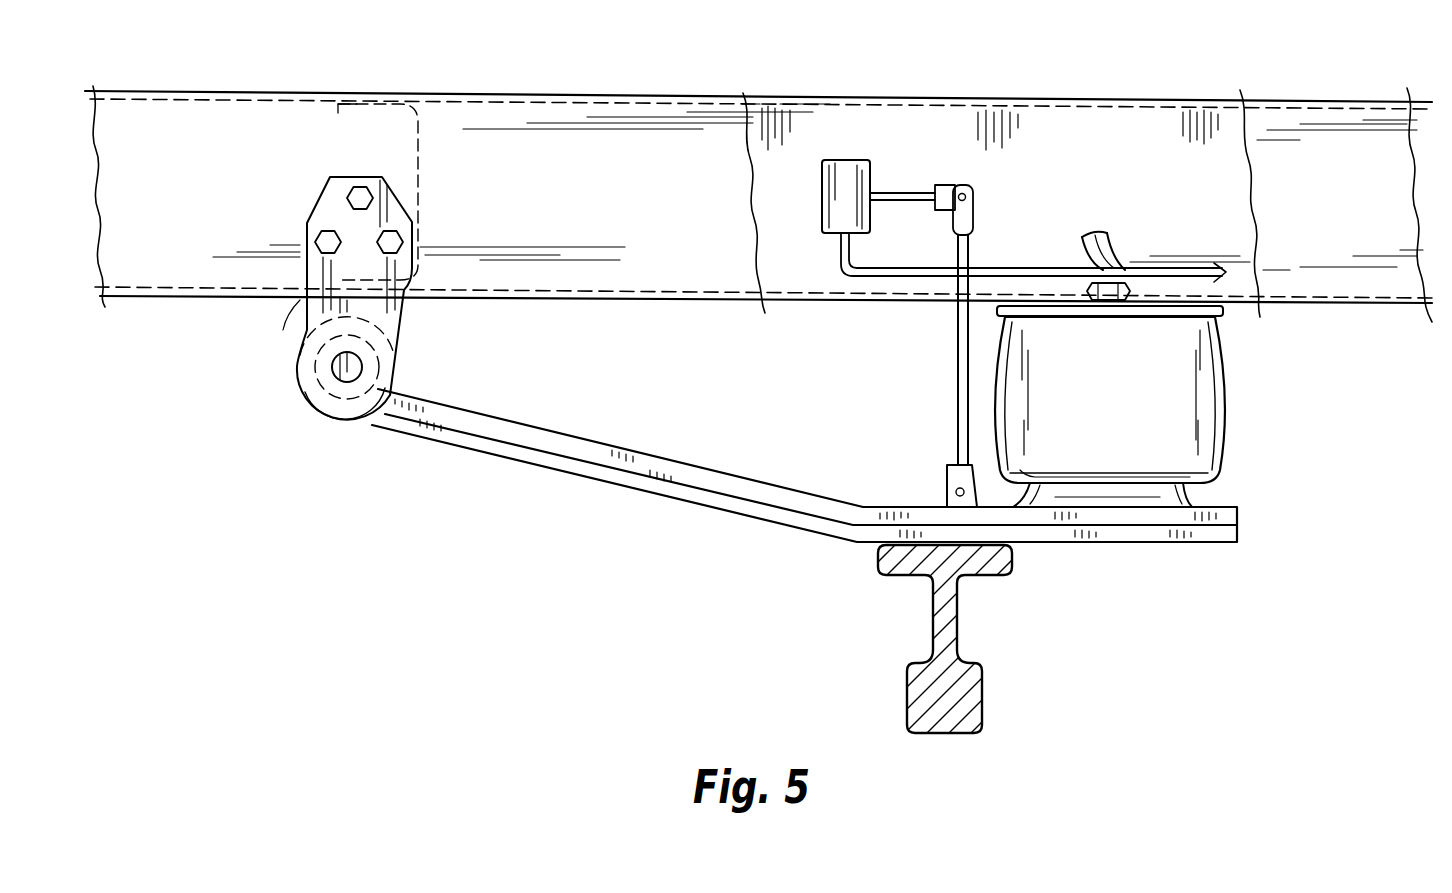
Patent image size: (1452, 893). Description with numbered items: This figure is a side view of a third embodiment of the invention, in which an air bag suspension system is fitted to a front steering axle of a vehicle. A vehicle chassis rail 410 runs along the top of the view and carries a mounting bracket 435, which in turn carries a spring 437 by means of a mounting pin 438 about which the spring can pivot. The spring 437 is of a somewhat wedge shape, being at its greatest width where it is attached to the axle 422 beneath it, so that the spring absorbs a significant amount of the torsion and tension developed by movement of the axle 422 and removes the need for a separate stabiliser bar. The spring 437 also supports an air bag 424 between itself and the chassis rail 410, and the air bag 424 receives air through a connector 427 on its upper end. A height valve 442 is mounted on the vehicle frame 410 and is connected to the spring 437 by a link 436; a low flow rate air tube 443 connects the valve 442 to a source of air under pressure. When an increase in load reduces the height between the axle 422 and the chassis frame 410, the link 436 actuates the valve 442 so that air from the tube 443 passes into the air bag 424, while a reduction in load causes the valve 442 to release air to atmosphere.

The vehicle chassis rail 410 is at (535, 93).
The axle 422 is at (957, 616).
The air bag 424 is at (1117, 413).
The connector 427 is at (1108, 232).
The mounting bracket 435 is at (313, 312).
The link 436 is at (955, 351).
The spring 437 is at (600, 468).
The mounting pin 438 is at (333, 378).
The height valve 442 is at (842, 170).
The low flow rate air tube 443 is at (1172, 267).